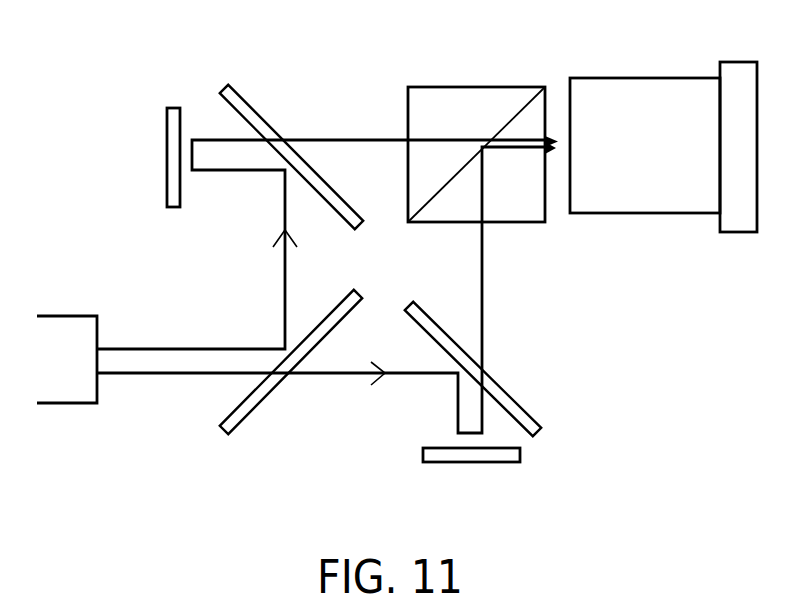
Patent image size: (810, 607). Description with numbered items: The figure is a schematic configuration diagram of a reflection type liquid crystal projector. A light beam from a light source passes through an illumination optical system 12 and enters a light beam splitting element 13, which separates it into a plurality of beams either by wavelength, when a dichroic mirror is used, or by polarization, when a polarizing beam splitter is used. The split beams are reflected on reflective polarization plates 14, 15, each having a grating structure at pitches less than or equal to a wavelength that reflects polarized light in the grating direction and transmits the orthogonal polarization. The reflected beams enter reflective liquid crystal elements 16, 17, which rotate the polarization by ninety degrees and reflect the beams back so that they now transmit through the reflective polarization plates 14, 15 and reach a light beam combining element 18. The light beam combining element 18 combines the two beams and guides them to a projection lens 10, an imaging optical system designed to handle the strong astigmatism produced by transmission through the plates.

The projection lens 10 is at (688, 96).
The illumination optical system 12 is at (76, 328).
The light beam splitting element 13 is at (253, 402).
The reflective polarization plate 14 is at (252, 123).
The reflective polarization plate 15 is at (518, 412).
The reflective liquid crystal element 16 is at (173, 160).
The reflective liquid crystal element 17 is at (480, 465).
The light beam combining element 18 is at (497, 102).